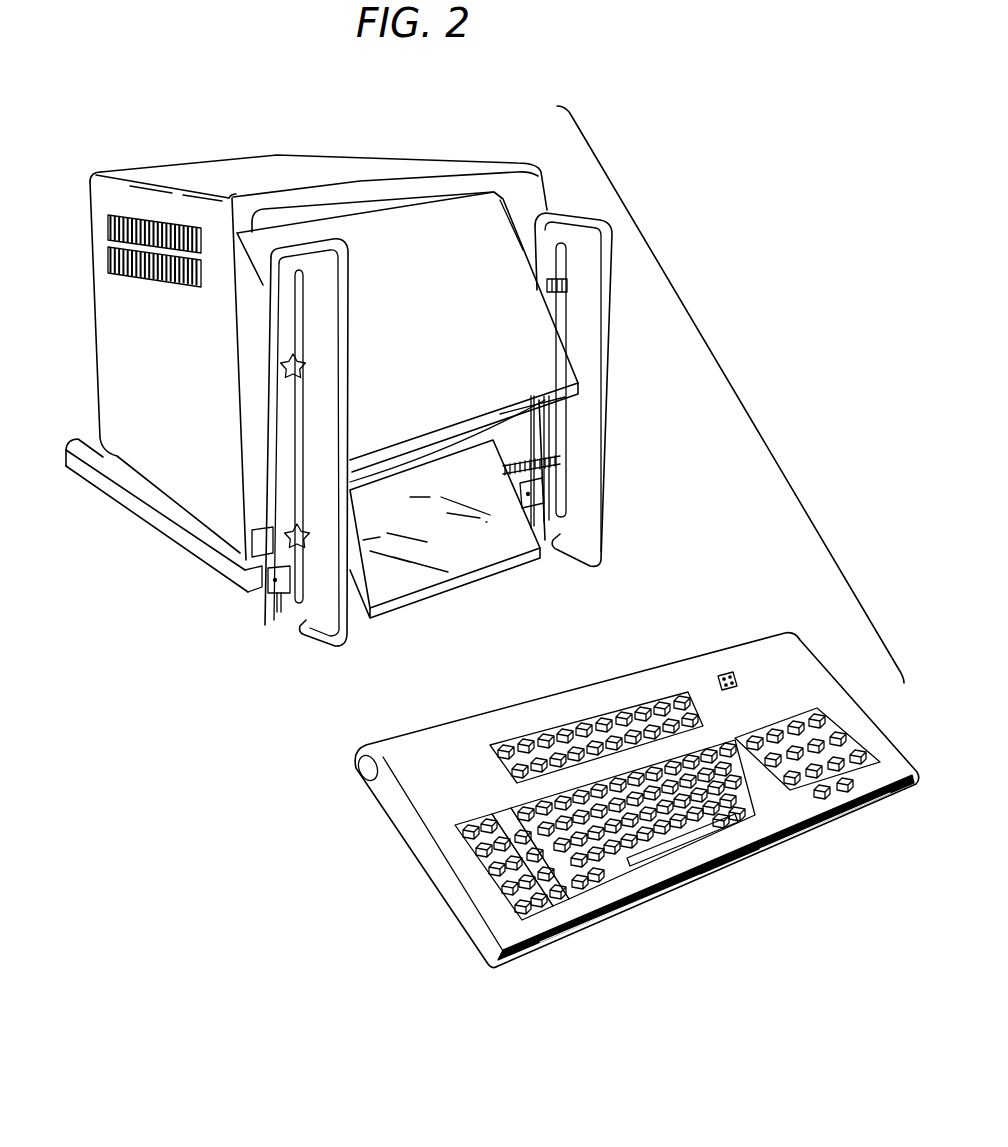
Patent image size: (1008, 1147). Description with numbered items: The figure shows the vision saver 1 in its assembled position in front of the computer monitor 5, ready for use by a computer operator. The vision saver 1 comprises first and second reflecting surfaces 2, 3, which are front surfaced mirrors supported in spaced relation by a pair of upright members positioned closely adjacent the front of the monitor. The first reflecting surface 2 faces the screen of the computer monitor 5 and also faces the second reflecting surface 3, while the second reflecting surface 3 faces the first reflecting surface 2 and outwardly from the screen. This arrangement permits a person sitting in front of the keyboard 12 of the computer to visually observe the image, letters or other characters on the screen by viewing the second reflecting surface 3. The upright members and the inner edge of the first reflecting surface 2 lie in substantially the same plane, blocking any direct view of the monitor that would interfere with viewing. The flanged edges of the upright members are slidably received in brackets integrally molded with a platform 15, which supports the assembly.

The vision saver 1 is at (293, 643).
The first reflecting surface 2 is at (545, 345).
The second reflecting surface 3 is at (480, 549).
The computer monitor 5 is at (357, 176).
The keyboard 12 is at (800, 672).
The platform 15 is at (155, 534).